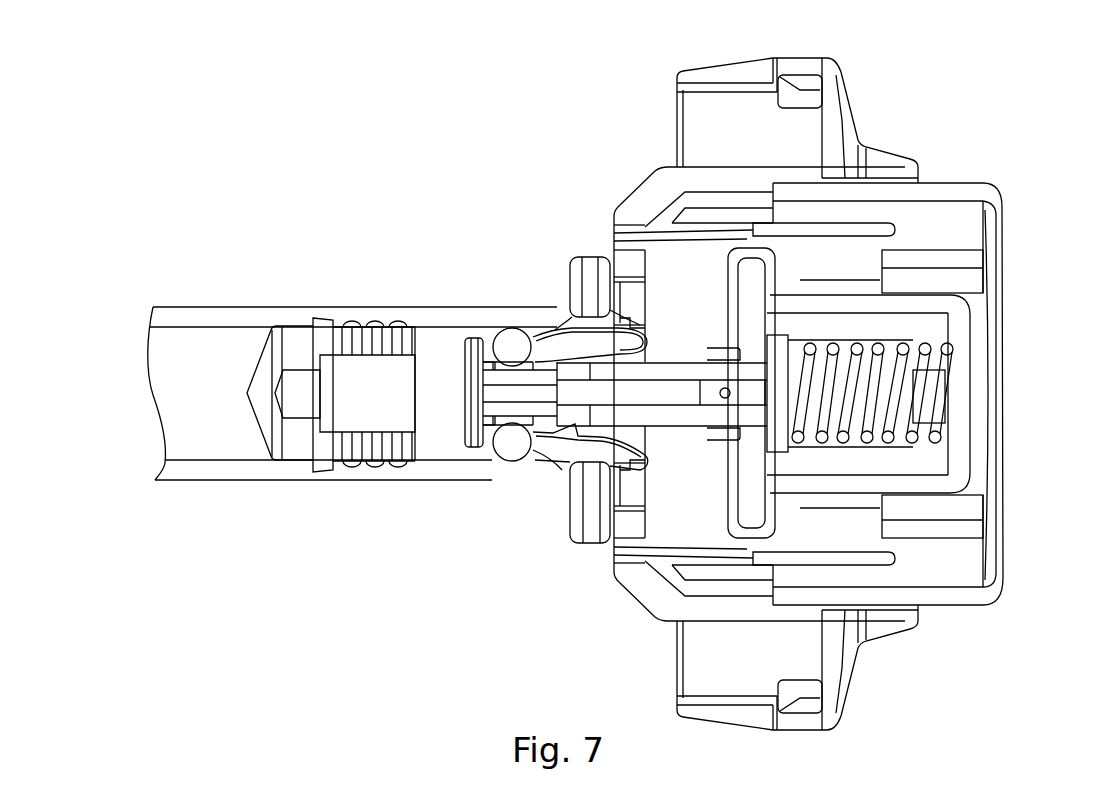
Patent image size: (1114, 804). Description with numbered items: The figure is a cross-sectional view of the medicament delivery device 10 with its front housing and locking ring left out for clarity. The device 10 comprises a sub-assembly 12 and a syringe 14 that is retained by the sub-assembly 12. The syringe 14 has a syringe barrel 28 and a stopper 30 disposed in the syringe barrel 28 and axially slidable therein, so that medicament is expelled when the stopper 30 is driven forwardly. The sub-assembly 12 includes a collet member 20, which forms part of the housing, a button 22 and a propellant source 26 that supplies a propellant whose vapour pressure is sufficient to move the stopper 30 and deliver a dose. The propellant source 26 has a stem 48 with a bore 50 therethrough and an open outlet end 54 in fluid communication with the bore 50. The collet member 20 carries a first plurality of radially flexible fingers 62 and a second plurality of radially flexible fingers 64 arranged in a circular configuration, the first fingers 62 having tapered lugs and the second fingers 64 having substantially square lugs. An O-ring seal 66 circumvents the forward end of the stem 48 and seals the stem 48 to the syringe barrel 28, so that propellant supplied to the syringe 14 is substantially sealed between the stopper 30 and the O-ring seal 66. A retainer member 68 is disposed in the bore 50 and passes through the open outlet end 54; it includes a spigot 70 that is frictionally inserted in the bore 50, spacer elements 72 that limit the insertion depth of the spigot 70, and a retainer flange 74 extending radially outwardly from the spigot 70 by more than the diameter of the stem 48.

The medicament delivery device 10 is at (548, 90).
The sub-assembly 12 is at (936, 90).
The syringe 14 is at (200, 484).
The collet member 20 is at (655, 592).
The button 22 is at (995, 574).
The propellant source 26 is at (956, 477).
The syringe barrel 28 is at (352, 470).
The stopper 30 is at (302, 340).
The stem 48 is at (694, 375).
The bore 50 is at (664, 401).
The open outlet end 54 is at (503, 403).
The first plurality of radially flexible fingers 62 is at (556, 348).
The second plurality of radially flexible fingers 64 is at (568, 447).
The O-ring seal 66 is at (511, 343).
The retainer member 68 is at (463, 433).
The spigot 70 is at (529, 415).
The spacer elements 72 is at (486, 345).
The retainer flange 74 is at (467, 355).